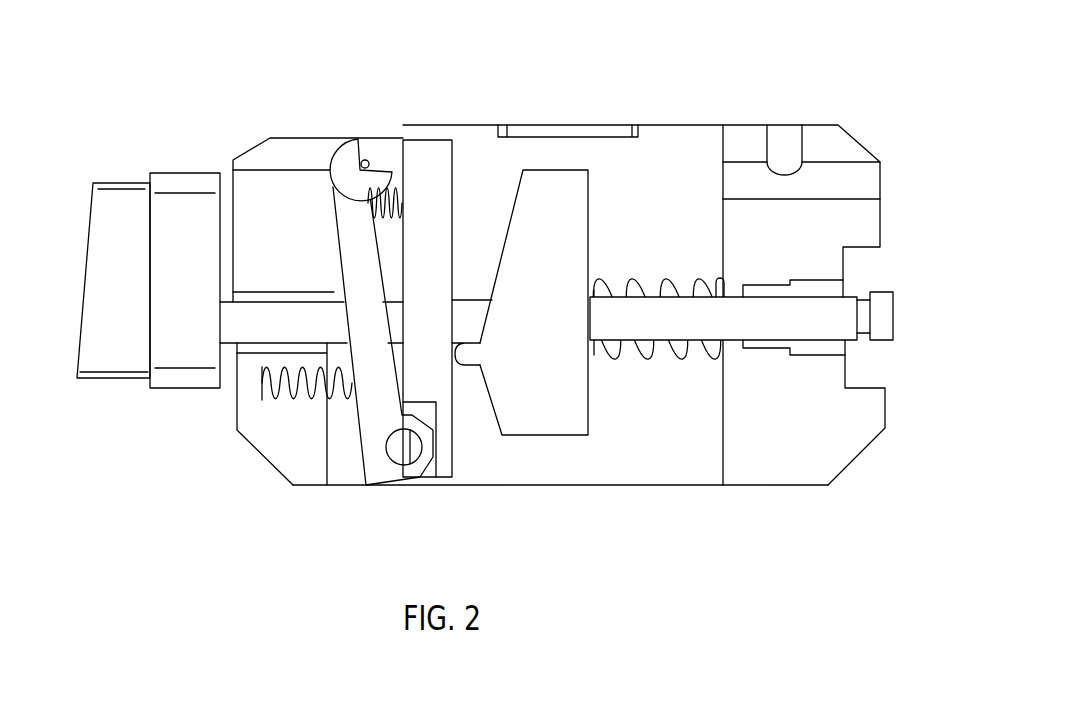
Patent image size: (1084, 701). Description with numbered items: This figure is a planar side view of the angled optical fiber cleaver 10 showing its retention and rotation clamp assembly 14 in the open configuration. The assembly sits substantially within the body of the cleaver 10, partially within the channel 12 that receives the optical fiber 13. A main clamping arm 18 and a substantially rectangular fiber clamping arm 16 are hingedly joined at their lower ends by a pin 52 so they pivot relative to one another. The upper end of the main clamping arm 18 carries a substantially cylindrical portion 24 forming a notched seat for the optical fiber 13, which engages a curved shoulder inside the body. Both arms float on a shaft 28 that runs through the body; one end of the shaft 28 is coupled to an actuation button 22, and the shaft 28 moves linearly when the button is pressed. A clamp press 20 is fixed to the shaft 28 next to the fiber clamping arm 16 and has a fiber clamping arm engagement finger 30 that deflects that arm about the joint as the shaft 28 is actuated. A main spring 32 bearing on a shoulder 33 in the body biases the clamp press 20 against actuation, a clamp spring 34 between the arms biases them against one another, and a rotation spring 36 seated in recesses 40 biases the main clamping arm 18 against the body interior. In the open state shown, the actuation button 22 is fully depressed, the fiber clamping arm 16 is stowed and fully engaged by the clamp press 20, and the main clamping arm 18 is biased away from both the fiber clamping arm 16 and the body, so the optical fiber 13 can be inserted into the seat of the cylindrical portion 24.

The angled optical fiber cleaver 10 is at (733, 70).
The channel 12 is at (378, 118).
The optical fiber 13 is at (380, 158).
The retention and rotation clamp assembly 14 is at (413, 497).
The fiber clamping arm 16 is at (433, 178).
The main clamping arm 18 is at (324, 240).
The clamp press 20 is at (548, 165).
The actuation button 22 is at (117, 213).
The substantially cylindrical portion 24 is at (334, 146).
The shaft 28 is at (766, 284).
The fiber clamping arm engagement finger 30 is at (461, 382).
The main spring 32 is at (602, 364).
The shoulder 33 is at (737, 366).
The clamp spring 34 is at (408, 182).
The rotation spring 36 is at (297, 420).
The recesses 40 is at (258, 401).
The pin 52 is at (388, 462).